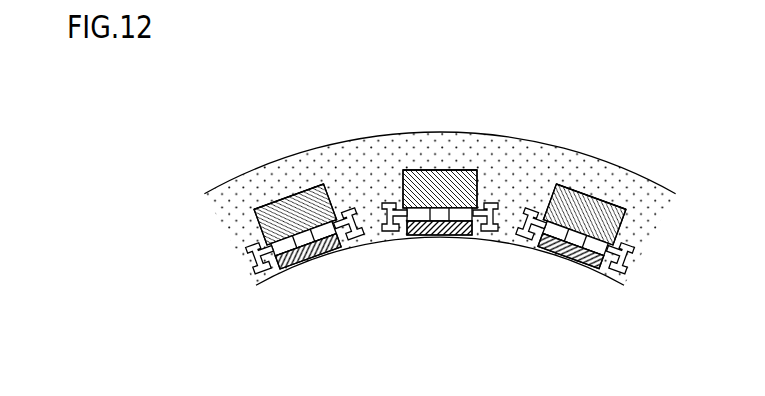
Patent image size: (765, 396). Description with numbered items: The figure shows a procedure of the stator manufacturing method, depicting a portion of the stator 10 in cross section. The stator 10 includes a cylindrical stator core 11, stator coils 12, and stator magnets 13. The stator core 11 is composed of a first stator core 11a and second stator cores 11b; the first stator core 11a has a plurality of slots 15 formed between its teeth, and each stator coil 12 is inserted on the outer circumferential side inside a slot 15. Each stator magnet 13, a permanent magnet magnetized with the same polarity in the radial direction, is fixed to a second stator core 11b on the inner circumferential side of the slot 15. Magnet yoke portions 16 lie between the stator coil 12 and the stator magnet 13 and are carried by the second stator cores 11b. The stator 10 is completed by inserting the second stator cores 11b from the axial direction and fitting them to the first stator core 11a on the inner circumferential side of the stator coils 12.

The stator 10 is at (403, 207).
The stator core 11 is at (404, 184).
The first stator core 11a is at (362, 147).
The second stator core 11b is at (388, 238).
The stator coil 12 is at (425, 169).
The stator magnet 13 is at (466, 234).
The slot 15 is at (447, 169).
The magnet yoke portion 16 is at (433, 234).